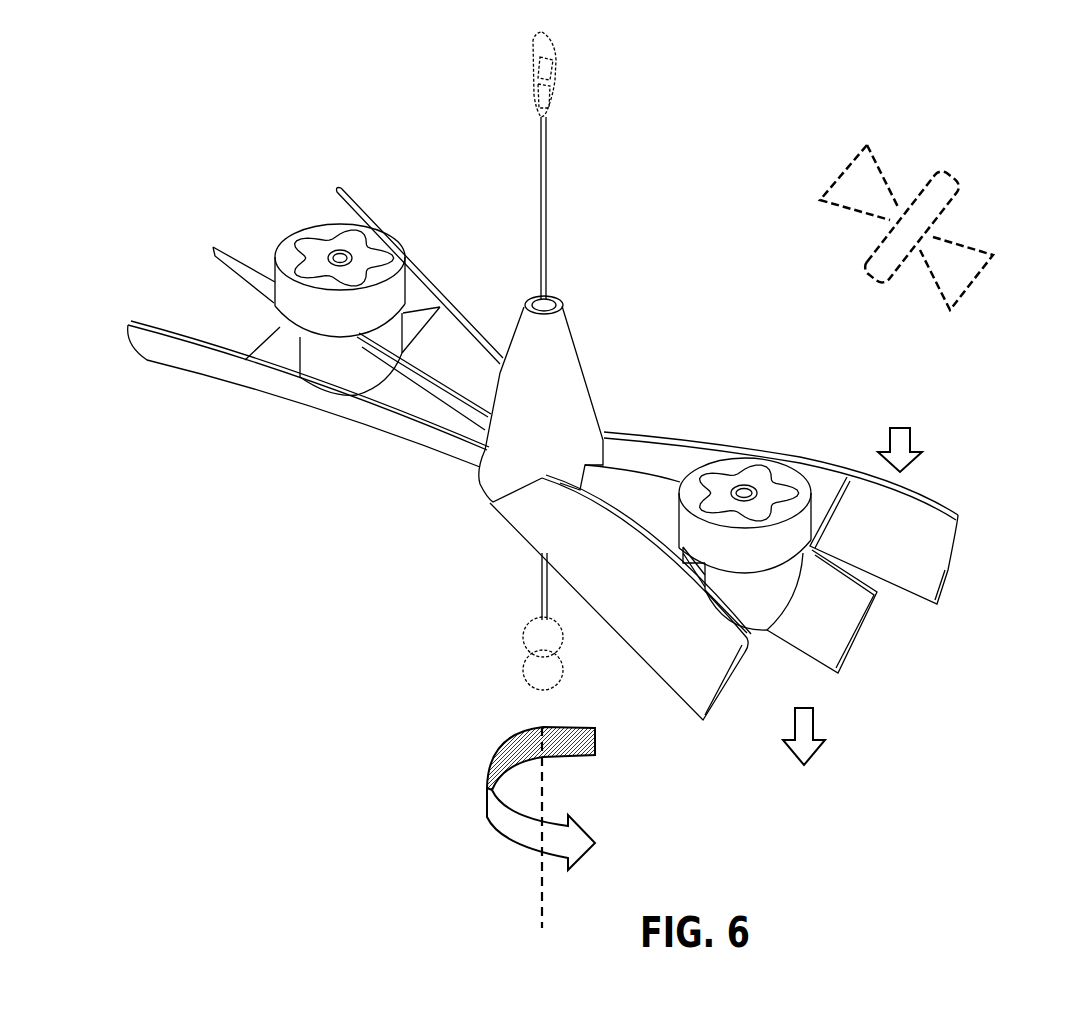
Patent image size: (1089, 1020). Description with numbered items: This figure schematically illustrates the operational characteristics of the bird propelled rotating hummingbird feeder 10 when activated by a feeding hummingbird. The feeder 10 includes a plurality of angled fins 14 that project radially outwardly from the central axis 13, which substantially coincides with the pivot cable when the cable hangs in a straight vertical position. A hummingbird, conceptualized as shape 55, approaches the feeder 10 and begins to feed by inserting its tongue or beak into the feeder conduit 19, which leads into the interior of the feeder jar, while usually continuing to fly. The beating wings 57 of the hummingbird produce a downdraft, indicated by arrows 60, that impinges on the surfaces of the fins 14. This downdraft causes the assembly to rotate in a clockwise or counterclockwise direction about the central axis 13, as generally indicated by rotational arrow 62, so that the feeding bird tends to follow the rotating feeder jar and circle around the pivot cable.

The bird propelled rotating hummingbird feeder assembly 10 is at (588, 376).
The central axis 13 is at (545, 880).
The fins 14 is at (955, 548).
The open conduit 19 is at (743, 490).
The hummingbird shape 55 is at (952, 168).
The beating wings 57 is at (980, 245).
The downdraft arrows 60 is at (915, 433).
The rotational arrow 62 is at (597, 737).